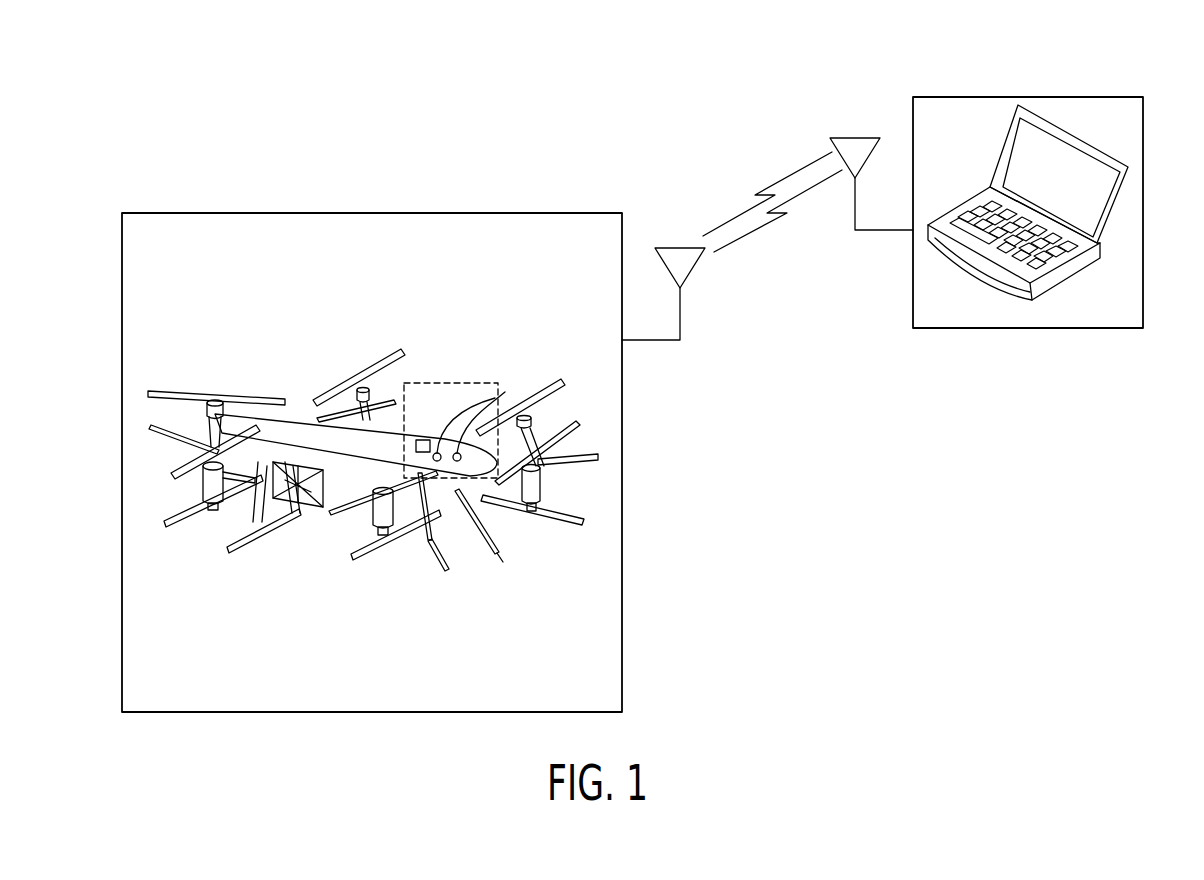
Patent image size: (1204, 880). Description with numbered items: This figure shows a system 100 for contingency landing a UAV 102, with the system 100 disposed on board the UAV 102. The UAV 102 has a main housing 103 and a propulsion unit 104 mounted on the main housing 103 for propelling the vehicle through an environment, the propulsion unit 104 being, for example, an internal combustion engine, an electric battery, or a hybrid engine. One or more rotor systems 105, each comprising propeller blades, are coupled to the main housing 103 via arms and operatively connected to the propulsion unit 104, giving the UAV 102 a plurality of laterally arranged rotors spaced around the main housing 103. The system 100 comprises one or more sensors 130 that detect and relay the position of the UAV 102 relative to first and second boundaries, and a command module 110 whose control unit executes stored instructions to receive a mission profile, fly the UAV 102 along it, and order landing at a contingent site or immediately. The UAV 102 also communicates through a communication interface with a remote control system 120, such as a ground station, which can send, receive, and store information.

The system 100 is at (469, 382).
The UAV 102 is at (373, 405).
The main housing 103 is at (330, 497).
The propulsion unit 104 is at (148, 495).
The rotor system 105 is at (210, 398).
The command module 110 is at (424, 438).
The remote control system 120 is at (882, 101).
The sensors 130 is at (502, 391).